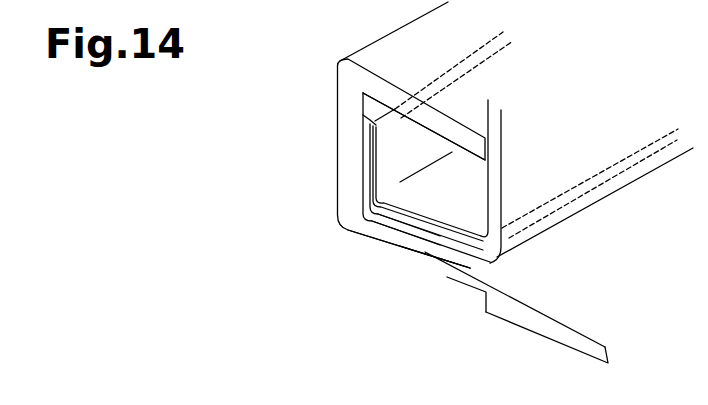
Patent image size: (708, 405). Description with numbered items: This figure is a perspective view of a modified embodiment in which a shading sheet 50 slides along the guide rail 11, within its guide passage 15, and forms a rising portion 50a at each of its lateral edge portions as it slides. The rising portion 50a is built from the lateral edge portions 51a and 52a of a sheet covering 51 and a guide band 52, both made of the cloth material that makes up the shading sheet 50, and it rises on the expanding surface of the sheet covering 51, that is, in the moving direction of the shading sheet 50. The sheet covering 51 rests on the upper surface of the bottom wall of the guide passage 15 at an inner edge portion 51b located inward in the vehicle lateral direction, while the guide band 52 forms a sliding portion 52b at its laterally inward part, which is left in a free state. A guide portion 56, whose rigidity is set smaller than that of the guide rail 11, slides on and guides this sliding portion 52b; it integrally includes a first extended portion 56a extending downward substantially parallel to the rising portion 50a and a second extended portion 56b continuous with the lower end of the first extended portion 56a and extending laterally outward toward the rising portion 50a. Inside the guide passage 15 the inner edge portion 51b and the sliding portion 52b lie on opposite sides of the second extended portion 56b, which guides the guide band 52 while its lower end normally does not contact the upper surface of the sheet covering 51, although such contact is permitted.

The guide rail 11 is at (418, 287).
The guide passage 15 is at (399, 246).
The shading sheet 50 is at (580, 337).
The rising portion 50a is at (273, 125).
The sheet covering 51 is at (518, 306).
The edge portion of sheet covering 51a is at (363, 143).
The inner edge portion 51b is at (445, 273).
The guide band 52 is at (362, 205).
The edge portion of guide band 52a is at (372, 158).
The sliding portion 52b is at (363, 233).
The guide portion 56 is at (590, 205).
The first extended portion 56a is at (502, 178).
The second extended portion 56b is at (428, 225).